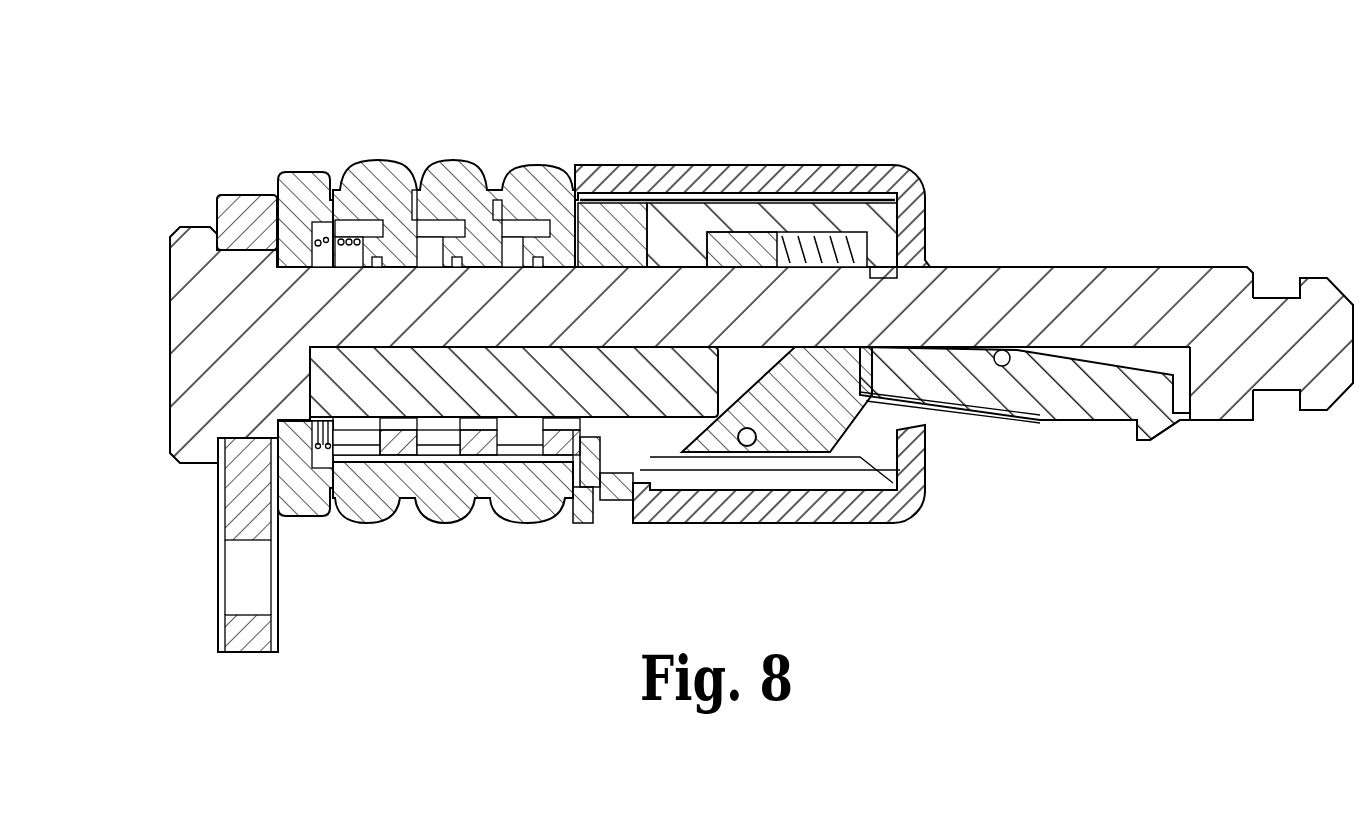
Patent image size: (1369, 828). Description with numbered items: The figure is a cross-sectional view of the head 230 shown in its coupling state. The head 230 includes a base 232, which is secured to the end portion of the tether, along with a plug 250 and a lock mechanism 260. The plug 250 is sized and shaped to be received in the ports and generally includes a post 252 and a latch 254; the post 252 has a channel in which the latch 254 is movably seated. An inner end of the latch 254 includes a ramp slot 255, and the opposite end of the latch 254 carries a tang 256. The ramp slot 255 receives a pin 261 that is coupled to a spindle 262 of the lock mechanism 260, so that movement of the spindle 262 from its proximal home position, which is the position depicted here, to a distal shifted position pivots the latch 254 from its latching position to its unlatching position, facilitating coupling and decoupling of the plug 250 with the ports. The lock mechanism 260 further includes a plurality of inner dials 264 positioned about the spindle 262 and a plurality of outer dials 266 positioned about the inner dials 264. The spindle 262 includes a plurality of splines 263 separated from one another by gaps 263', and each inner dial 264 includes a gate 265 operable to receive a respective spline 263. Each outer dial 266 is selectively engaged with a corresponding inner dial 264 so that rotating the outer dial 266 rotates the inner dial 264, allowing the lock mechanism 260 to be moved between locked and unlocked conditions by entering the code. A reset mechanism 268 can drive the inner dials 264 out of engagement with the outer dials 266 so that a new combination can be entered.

The head 230 is at (132, 140).
The base 232 is at (222, 500).
The plug 250 is at (1153, 306).
The post 252 is at (1174, 280).
The latch 254 is at (997, 398).
The ramp slot 255 is at (780, 400).
The tang 256 is at (1147, 437).
The lock mechanism 260 is at (340, 108).
The pin 261 is at (742, 440).
The spindle 262 is at (443, 362).
The splines 263 is at (365, 405).
The gaps 263' is at (415, 420).
The inner dials 264 is at (519, 192).
The gate 265 is at (473, 423).
The outer dials 266 is at (450, 172).
The reset mechanism 268 is at (300, 210).